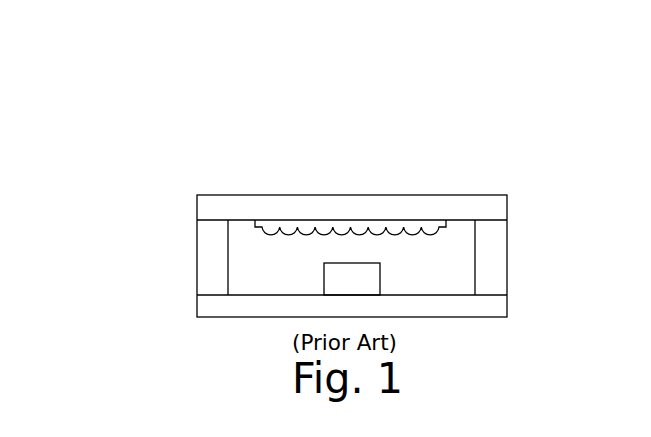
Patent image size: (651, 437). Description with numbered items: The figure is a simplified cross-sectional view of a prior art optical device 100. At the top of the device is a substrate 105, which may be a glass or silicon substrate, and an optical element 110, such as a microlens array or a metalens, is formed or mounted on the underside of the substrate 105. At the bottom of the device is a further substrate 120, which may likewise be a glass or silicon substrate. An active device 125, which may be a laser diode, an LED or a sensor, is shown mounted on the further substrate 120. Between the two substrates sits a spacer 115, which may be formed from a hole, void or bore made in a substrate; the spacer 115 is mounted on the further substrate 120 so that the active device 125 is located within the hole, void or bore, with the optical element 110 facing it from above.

The optical device 100 is at (114, 86).
The substrate 105 is at (197, 199).
The optical element 110 is at (392, 230).
The spacer 115 is at (197, 235).
The further substrate 120 is at (197, 303).
The active device 125 is at (362, 286).